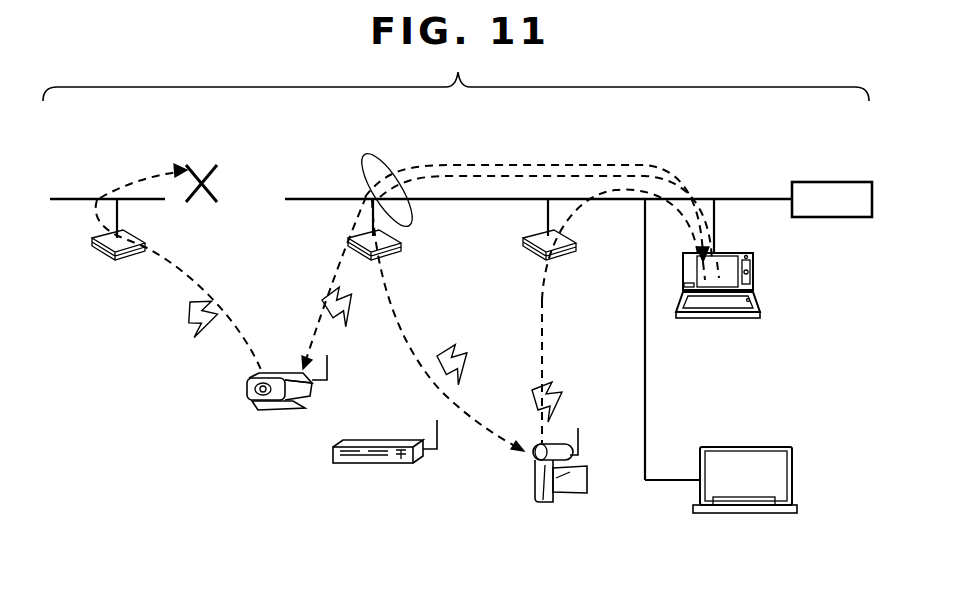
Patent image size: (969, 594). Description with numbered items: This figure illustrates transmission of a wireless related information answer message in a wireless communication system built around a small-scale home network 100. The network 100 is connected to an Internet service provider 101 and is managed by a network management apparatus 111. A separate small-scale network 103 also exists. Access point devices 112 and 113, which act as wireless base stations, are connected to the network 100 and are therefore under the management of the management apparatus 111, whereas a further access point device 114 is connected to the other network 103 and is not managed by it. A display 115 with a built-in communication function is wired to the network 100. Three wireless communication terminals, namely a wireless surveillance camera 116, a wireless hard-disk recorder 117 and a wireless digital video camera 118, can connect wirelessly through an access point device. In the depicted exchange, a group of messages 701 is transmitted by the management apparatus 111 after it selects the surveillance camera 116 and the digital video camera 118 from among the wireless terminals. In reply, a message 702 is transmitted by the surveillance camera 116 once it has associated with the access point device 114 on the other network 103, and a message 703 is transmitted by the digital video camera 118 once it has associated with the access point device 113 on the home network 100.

The small-scale network 100 is at (742, 197).
The Internet service provider 101 is at (830, 181).
The small-scale network 103 is at (78, 198).
The network management apparatus 111 is at (716, 320).
The access point device 112 is at (403, 243).
The access point device 113 is at (578, 243).
The access point device 114 is at (118, 266).
The display 115 is at (744, 516).
The wireless surveillance camera 116 is at (280, 406).
The wireless HDR 117 is at (370, 466).
The wireless DVC 118 is at (560, 506).
The group of messages 701 is at (382, 176).
The message 702 is at (132, 186).
The message 703 is at (545, 330).